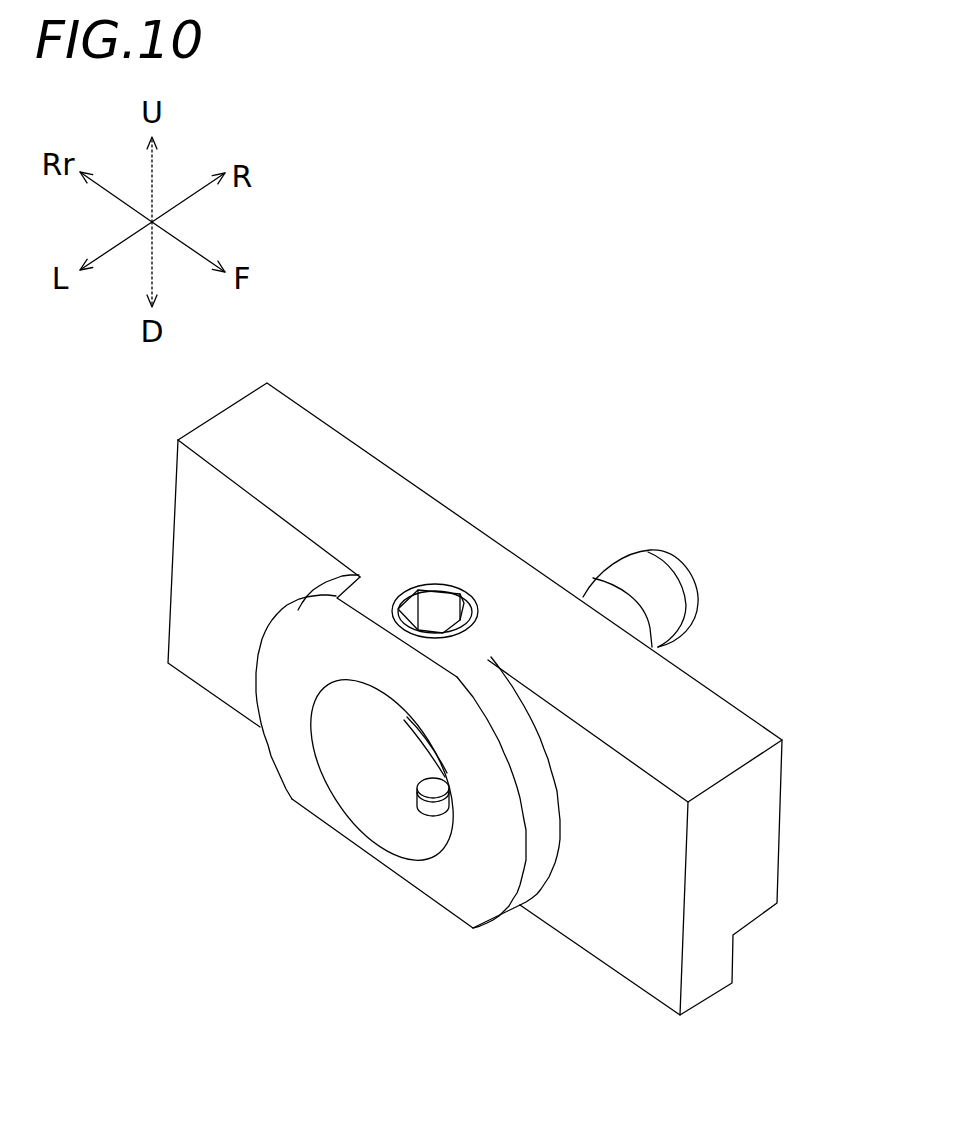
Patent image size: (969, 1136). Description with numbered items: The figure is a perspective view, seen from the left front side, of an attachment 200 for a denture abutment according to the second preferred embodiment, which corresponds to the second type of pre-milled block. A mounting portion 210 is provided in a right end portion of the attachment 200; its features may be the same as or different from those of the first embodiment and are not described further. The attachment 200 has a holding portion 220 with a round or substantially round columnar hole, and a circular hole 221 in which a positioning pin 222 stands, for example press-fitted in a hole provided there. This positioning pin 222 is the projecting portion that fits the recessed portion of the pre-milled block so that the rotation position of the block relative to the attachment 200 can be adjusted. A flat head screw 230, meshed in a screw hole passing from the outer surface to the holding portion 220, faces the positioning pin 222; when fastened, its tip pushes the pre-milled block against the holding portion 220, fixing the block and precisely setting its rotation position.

The attachment 200 is at (577, 360).
The mounting portion 210 is at (680, 533).
The holding portion 220 is at (358, 767).
The circular hole 221 is at (368, 795).
The positioning pin 222 is at (423, 800).
The flat head screw 230 is at (432, 583).